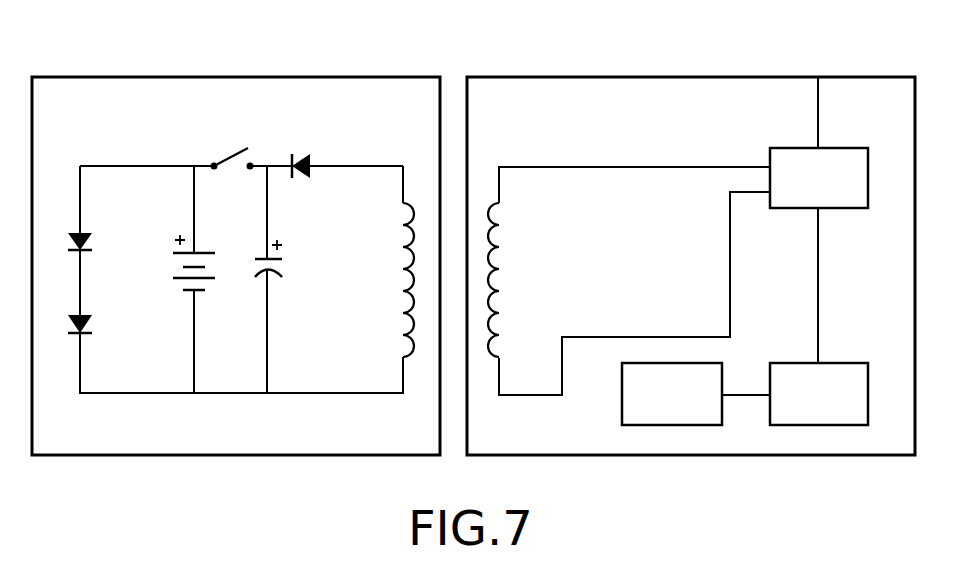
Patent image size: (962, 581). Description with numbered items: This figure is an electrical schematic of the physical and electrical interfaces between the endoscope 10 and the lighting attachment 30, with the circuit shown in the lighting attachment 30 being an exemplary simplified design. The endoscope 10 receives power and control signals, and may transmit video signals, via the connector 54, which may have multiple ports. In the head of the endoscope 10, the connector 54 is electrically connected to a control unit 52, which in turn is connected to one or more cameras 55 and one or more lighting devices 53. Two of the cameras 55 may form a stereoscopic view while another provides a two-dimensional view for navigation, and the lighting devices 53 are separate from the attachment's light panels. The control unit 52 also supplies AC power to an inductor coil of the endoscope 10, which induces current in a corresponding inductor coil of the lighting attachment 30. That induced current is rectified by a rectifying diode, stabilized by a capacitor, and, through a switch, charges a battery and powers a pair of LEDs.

The endoscope 10 is at (882, 77).
The lighting attachment 30 is at (105, 77).
The control unit 52 is at (805, 192).
The lighting device 53 is at (659, 408).
The connector 54 is at (820, 97).
The camera 55 is at (806, 408).